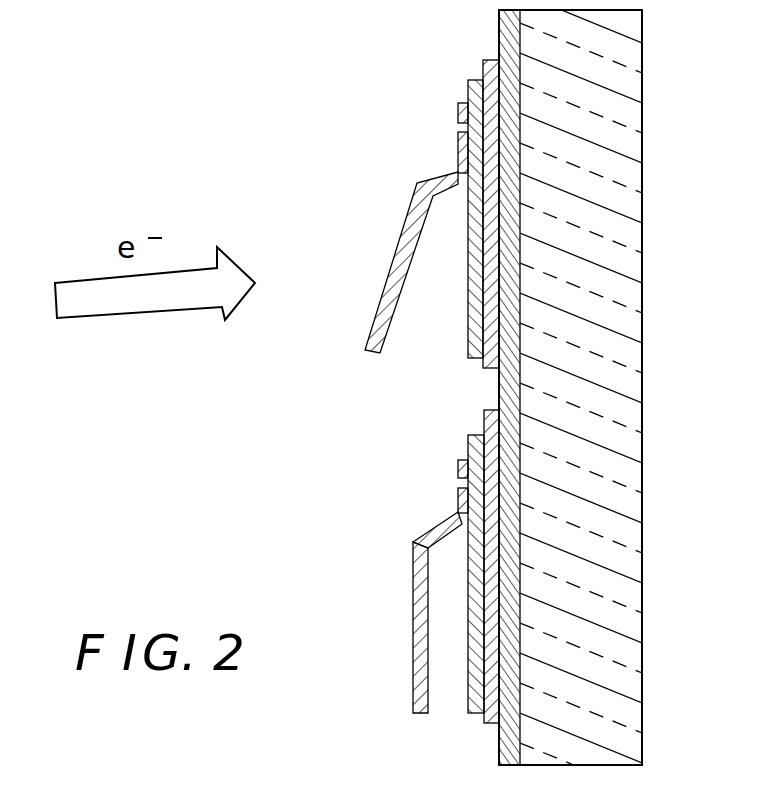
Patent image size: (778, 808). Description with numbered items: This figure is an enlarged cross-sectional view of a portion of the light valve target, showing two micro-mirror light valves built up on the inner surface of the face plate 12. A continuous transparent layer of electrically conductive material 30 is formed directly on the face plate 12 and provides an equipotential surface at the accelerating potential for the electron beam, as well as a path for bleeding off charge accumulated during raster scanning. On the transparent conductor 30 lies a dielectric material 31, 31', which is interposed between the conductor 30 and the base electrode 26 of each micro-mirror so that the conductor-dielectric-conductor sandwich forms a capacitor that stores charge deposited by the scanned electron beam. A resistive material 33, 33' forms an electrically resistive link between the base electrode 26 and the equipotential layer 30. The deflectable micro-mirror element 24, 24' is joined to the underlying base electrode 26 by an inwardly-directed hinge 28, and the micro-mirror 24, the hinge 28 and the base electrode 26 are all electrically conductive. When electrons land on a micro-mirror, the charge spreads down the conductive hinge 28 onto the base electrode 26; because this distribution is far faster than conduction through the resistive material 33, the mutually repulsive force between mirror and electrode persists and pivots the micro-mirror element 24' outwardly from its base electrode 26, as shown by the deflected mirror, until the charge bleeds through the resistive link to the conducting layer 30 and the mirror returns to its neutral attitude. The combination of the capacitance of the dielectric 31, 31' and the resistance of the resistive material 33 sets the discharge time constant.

The face plate 12 is at (613, 140).
The transparent layer of electrically conductive material 30 is at (505, 487).
The dielectric material 31 is at (597, 566).
The dielectric material 31' is at (603, 214).
The base electrode 26 is at (467, 690).
The resistive material 33 is at (401, 460).
The resistive material 33' is at (430, 105).
The hinge 28 is at (433, 540).
The micro-mirror element 24 is at (355, 627).
The micro-mirror element 24' is at (385, 262).